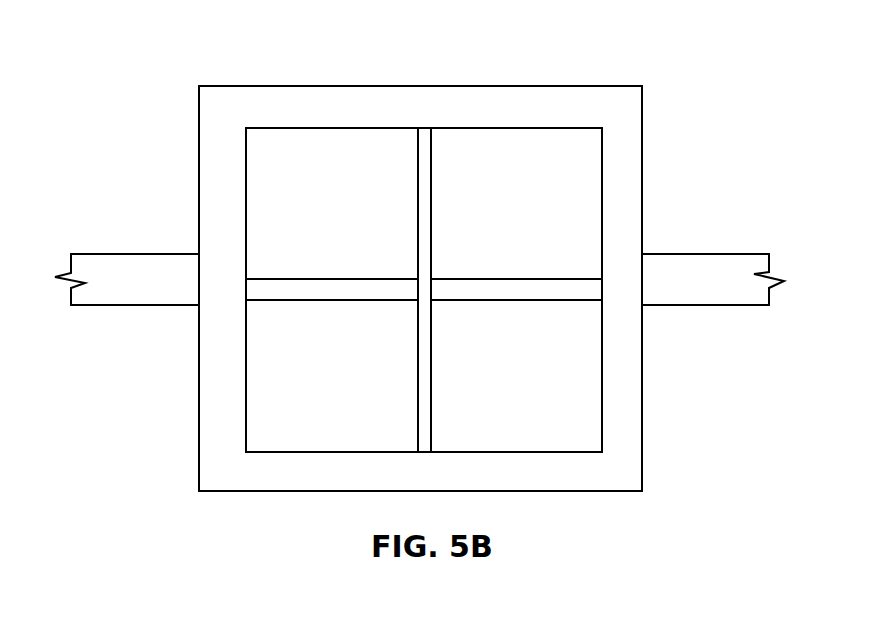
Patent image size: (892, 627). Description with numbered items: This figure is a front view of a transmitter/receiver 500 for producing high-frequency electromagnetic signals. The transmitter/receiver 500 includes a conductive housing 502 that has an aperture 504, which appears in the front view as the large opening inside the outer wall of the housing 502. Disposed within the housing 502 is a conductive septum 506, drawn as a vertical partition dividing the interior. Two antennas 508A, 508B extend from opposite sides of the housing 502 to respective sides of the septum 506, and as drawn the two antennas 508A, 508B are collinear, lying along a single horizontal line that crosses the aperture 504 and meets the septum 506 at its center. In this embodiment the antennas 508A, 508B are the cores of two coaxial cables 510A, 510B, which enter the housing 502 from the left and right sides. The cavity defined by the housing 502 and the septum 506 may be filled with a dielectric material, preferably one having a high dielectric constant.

The transmitter/receiver 500 is at (693, 58).
The conductive housing 502 is at (568, 98).
The aperture 504 is at (558, 386).
The conductive septum 506 is at (425, 223).
The antenna 508A is at (261, 290).
The antenna 508B is at (586, 290).
The coaxial cable 510A is at (162, 262).
The coaxial cable 510B is at (690, 260).